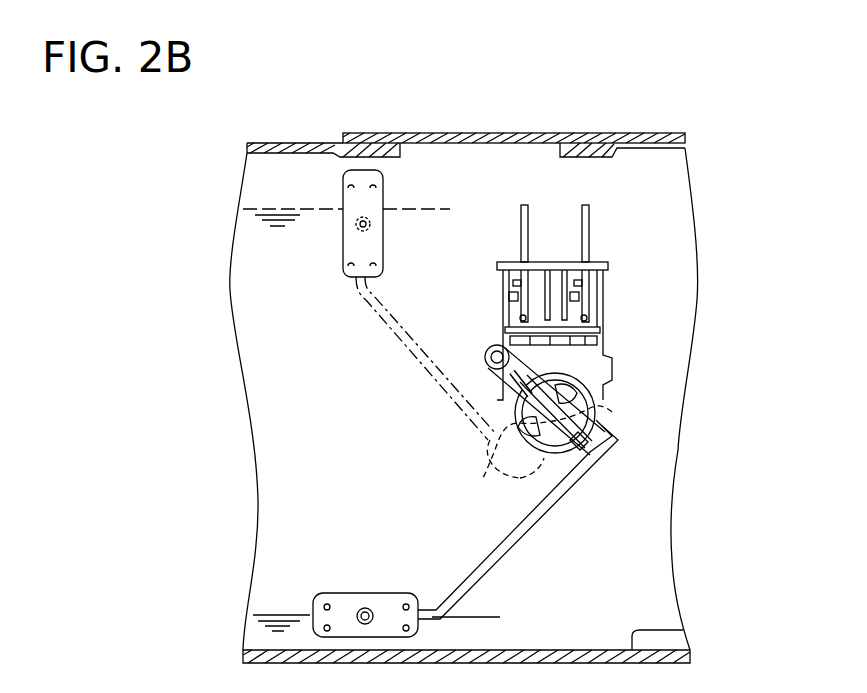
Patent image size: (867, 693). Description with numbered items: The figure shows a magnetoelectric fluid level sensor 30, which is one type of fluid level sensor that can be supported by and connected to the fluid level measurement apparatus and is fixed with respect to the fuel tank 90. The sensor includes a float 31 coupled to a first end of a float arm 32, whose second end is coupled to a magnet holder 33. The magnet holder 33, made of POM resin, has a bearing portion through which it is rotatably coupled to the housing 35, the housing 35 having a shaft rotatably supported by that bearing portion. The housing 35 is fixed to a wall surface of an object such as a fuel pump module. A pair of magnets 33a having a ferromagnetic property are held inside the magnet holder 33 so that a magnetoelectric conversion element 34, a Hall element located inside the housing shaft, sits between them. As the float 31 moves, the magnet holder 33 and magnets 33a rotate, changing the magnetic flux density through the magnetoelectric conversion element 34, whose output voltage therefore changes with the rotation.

The magnetoelectric fluid level sensor 30 is at (593, 253).
The float 31 is at (358, 593).
The float arm 32 is at (545, 518).
The magnet holder 33 is at (612, 380).
The pair of magnets 33a is at (522, 478).
The magnetoelectric conversion element 34 is at (612, 412).
The housing 35 is at (610, 318).
The fuel tank 90 is at (683, 633).